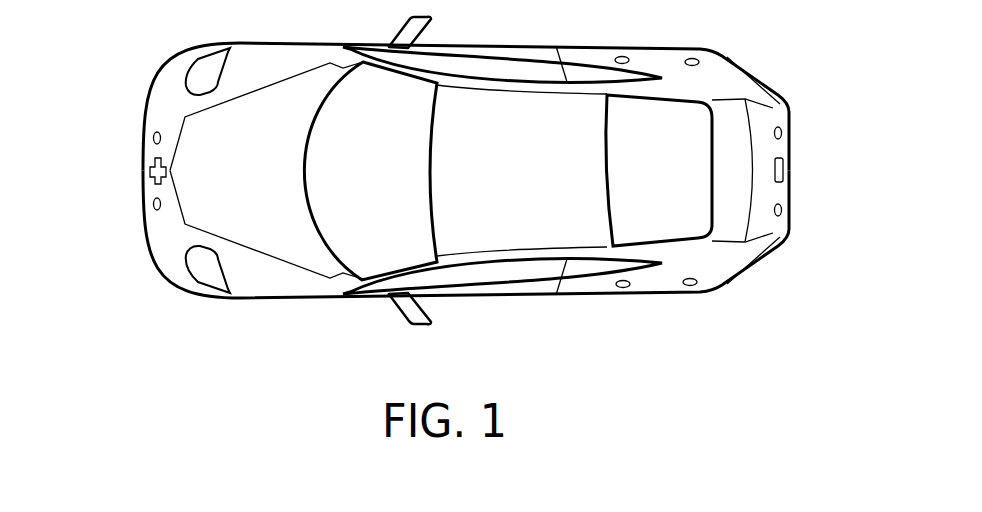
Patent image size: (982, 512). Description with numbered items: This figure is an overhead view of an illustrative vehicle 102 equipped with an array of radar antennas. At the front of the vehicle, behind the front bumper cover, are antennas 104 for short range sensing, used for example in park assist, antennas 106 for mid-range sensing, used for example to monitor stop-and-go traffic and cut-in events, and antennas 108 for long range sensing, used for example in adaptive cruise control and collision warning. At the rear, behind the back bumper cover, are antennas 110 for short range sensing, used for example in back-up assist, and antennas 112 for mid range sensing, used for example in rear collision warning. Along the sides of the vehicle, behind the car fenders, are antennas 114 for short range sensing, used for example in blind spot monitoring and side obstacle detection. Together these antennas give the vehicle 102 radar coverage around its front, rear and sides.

The vehicle 102 is at (300, 298).
The antennas for short range sensing 104 is at (152, 138).
The antennas for mid-range sensing 106 is at (147, 178).
The antennas for long range sensing 108 is at (147, 168).
The antennas for short range sensing 110 is at (782, 134).
The antennas for mid range sensing 112 is at (785, 170).
The antennas for short range sensing 114 is at (627, 52).